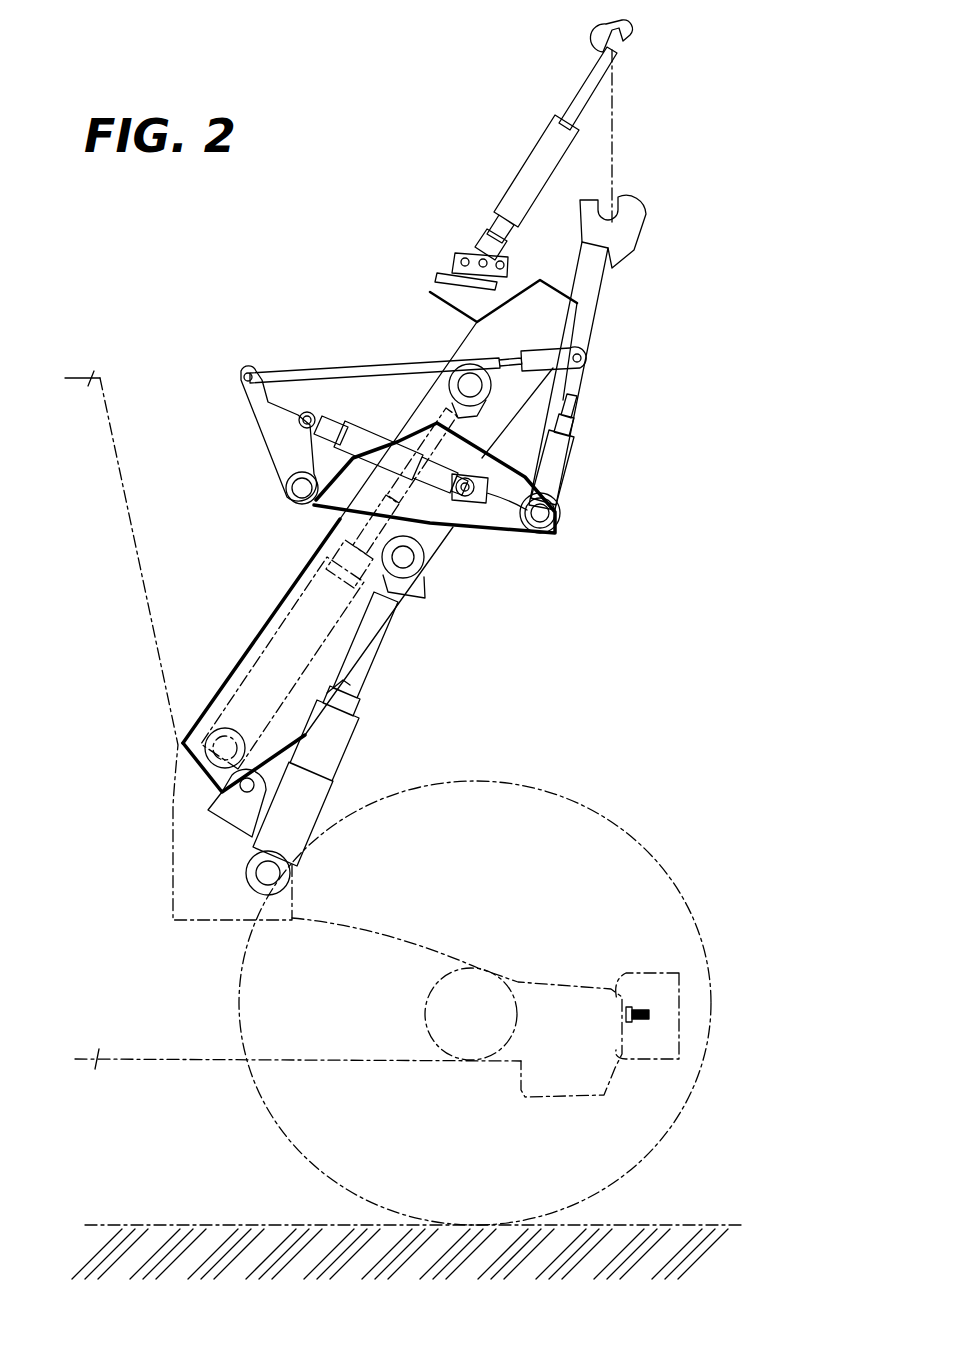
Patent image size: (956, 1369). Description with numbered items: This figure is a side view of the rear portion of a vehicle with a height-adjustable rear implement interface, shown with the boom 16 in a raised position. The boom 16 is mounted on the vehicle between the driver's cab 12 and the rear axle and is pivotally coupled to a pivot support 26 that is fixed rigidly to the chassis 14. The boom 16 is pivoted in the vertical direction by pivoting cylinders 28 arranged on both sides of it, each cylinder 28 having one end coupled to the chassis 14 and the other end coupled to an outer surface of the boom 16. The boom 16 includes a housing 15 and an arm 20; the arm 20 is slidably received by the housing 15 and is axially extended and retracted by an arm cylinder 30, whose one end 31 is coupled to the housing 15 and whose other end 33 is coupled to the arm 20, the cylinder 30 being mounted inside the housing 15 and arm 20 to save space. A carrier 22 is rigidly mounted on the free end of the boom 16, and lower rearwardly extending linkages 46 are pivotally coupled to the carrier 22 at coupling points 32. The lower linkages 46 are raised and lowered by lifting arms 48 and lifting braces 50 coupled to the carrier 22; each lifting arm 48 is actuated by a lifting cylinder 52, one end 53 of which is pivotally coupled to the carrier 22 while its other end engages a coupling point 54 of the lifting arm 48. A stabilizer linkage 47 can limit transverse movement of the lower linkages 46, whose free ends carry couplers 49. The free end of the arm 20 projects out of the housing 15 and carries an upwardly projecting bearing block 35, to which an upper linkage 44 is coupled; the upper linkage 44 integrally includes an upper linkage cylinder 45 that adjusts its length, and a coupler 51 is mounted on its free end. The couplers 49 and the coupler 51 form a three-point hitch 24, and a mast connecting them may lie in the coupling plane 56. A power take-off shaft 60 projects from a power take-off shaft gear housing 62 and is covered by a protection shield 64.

The driver's cab 12 is at (89, 363).
The chassis 14 is at (298, 1077).
The housing 15 is at (263, 625).
The boom 16 is at (203, 650).
The arm 20 is at (420, 536).
The carrier 22 is at (498, 518).
The three-point hitch 24 is at (445, 101).
The pivot support 26 is at (240, 788).
The pivoting cylinder 28 is at (297, 793).
The arm cylinder 30 is at (267, 679).
The end of arm cylinder 31 is at (206, 748).
The coupling point 32 is at (560, 527).
The end of arm cylinder 33 is at (470, 385).
The bearing block 35 is at (460, 298).
The upper linkage 44 is at (577, 100).
The upper linkage cylinder 45 is at (536, 174).
The lower linkage 46 is at (600, 300).
The stabilizer linkage 47 is at (556, 470).
The lifting arm 48 is at (264, 410).
The coupler 49 is at (630, 225).
The lifting brace 50 is at (317, 372).
The coupler 51 is at (598, 36).
The lifting cylinder 52 is at (372, 450).
The end of lifting cylinder 53 is at (478, 492).
The coupling point 54 is at (300, 422).
The coupling plane 56 is at (617, 143).
The power take-off shaft 60 is at (650, 1021).
The power take-off shaft gear housing 62 is at (604, 1097).
The power take-off shaft protection shield 64 is at (664, 972).